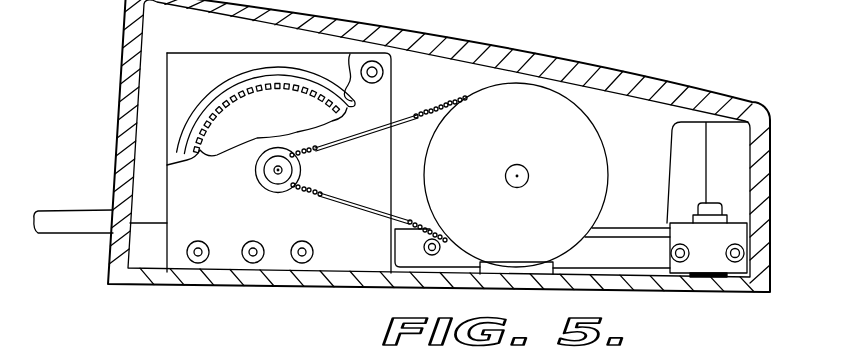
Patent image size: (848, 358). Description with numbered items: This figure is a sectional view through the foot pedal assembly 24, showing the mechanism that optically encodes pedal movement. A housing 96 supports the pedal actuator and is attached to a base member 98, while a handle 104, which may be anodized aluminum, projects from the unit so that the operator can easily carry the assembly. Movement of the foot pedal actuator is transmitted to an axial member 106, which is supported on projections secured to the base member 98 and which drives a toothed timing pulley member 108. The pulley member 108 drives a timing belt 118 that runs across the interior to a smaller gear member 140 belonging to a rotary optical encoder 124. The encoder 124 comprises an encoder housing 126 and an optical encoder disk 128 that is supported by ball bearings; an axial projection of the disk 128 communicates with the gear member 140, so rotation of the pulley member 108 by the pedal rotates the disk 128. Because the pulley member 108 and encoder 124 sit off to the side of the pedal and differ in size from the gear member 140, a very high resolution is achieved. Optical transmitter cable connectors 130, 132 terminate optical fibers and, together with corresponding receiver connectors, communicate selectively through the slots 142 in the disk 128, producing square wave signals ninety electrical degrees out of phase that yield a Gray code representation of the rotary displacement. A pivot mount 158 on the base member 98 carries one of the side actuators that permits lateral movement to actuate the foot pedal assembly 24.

The foot pedal assembly 24 is at (72, 43).
The housing 96 is at (120, 96).
The base member 98 is at (229, 280).
The handle 104 is at (52, 217).
The rotary optical encoder 124 is at (191, 54).
The encoder housing 126 is at (173, 69).
The optical encoder disk 128 is at (196, 128).
The slots 142 is at (262, 90).
The gear member 140 is at (265, 173).
The timing belt 118 is at (423, 117).
The optical transmitter cable connector 130 is at (247, 240).
The optical transmitter cable connector 132 is at (309, 248).
The axial member 106 is at (517, 165).
The toothed timing pulley member 108 is at (593, 162).
The pivot mount 158 is at (702, 247).